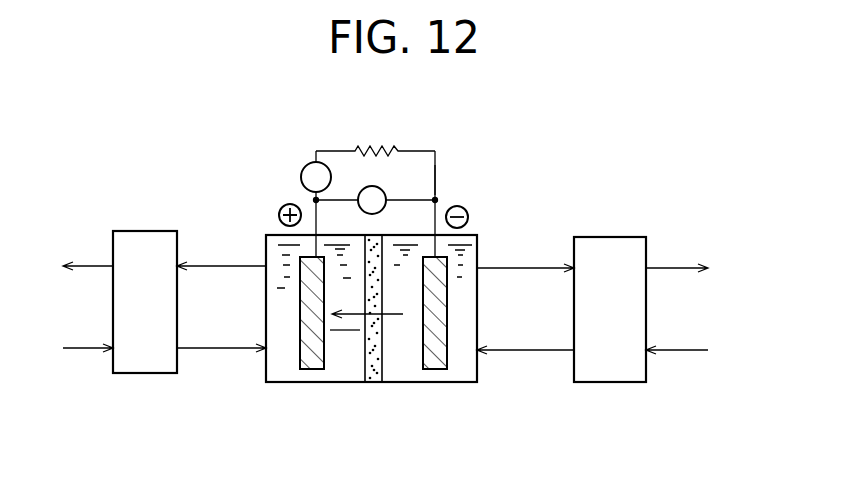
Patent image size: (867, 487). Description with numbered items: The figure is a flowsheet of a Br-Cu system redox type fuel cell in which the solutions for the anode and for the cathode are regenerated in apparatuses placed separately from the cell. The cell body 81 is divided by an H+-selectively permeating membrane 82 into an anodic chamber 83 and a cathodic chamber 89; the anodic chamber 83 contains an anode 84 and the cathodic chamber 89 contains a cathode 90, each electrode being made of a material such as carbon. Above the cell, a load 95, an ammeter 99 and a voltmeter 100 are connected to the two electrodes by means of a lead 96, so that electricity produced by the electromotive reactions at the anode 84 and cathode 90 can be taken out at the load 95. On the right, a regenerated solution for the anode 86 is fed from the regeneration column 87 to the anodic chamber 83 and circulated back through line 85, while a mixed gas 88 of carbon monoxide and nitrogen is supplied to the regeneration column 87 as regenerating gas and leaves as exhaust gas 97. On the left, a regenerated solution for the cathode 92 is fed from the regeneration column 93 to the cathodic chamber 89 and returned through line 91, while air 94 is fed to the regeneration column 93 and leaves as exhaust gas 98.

The cell body 81 is at (308, 384).
The H+-selectively permeating membrane 82 is at (373, 382).
The anodic chamber 83 is at (405, 373).
The anode 84 is at (443, 370).
The catholyte outlet pipe 85 is at (525, 265).
The regenerated solution for the anode 86 is at (528, 354).
The regeneration apparatus for the solution for the anode 87 is at (610, 384).
The mixed gas 88 is at (690, 354).
The cathodic chamber 89 is at (343, 370).
The cathode 90 is at (305, 365).
The anolyte outlet pipe 91 is at (220, 262).
The regenerated solution for the cathode 92 is at (215, 352).
The regeneration apparatus for the solution for the cathode 93 is at (143, 375).
The air 94 is at (83, 352).
The load 95 is at (385, 148).
The lead 96 is at (437, 181).
The exhaust gas 97 is at (683, 265).
The exhaust gas 98 is at (89, 262).
The ammeter 99 is at (305, 169).
The voltmeter 100 is at (386, 193).